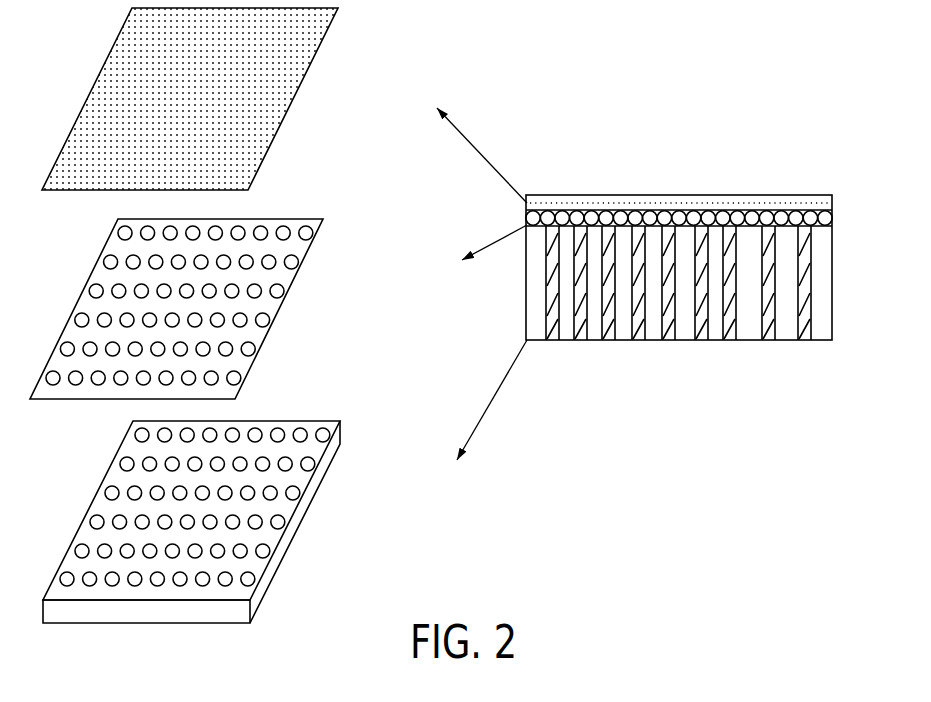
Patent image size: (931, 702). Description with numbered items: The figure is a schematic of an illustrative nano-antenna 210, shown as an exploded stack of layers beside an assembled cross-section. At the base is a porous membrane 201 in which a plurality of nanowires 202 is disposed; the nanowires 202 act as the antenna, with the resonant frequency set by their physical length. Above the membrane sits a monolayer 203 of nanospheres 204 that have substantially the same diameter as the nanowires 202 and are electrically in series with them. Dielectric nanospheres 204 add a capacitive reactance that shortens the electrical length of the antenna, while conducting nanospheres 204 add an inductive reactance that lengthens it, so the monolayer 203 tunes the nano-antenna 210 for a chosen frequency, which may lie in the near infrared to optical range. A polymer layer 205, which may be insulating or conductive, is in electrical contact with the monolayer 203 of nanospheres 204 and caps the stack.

The porous membrane 201 is at (305, 531).
The nanowires 202 is at (616, 322).
The monolayer 203 is at (268, 347).
The nanospheres 204 is at (272, 288).
The polymer layer 205 is at (302, 99).
The nano-antenna 210 is at (679, 302).